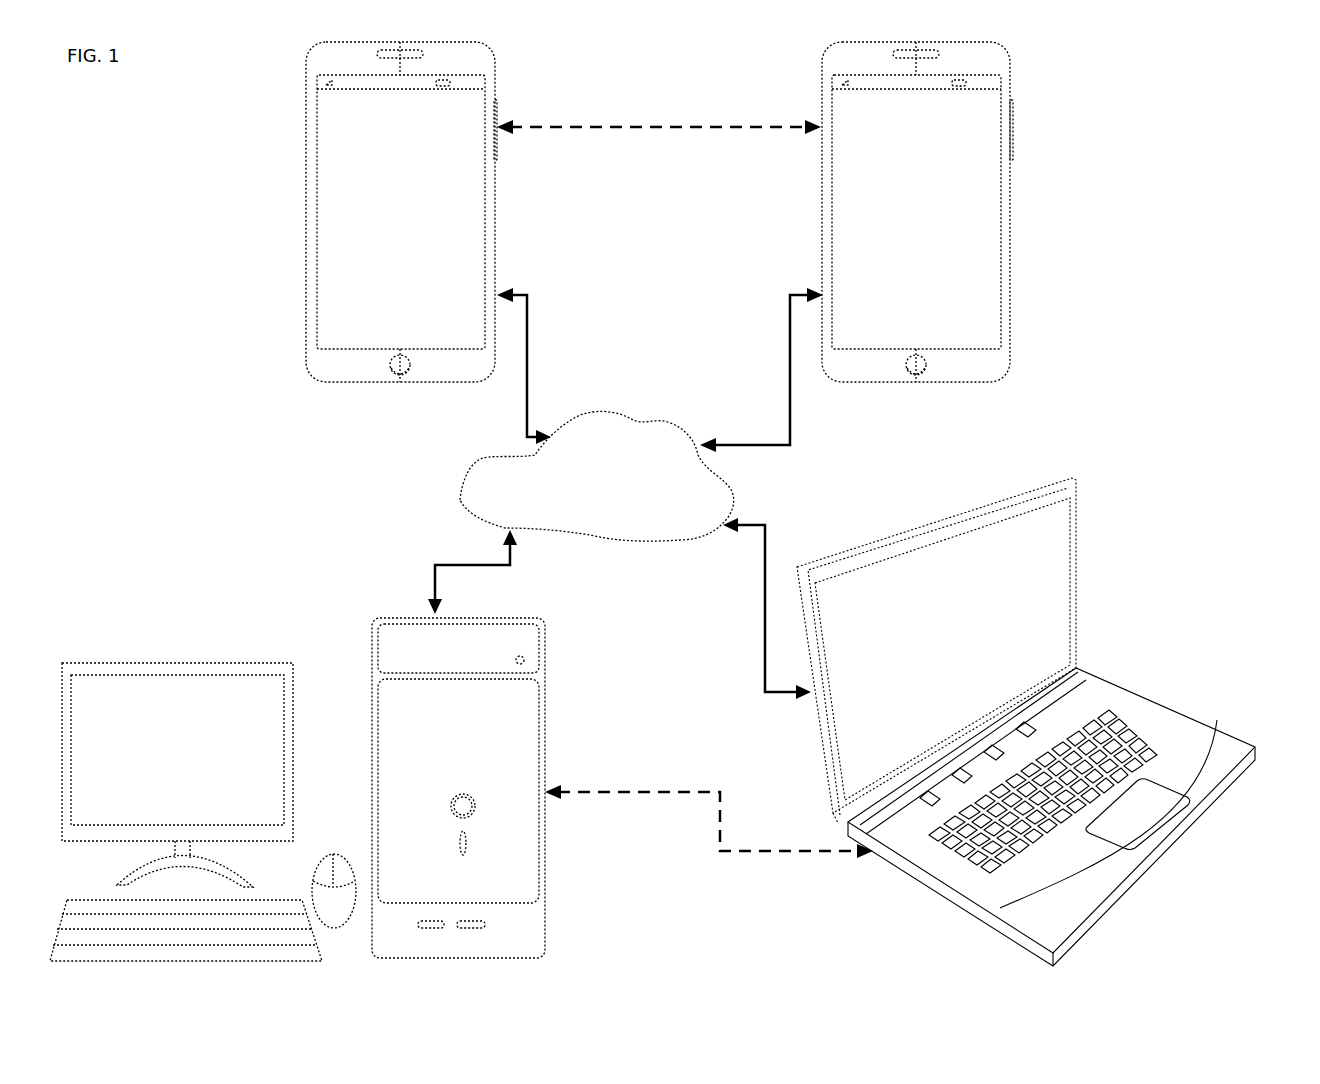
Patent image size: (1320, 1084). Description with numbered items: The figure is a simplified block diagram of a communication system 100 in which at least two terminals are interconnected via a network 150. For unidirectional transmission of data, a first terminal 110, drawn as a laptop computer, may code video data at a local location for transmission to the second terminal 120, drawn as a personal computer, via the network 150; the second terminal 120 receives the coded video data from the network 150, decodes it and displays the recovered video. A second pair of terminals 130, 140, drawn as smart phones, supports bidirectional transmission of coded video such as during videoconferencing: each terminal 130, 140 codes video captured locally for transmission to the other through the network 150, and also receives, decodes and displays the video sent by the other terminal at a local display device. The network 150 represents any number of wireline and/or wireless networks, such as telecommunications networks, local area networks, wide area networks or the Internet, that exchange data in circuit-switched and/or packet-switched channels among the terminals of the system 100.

The communication system 100 is at (652, 504).
The first terminal 110 is at (1076, 562).
The second terminal 120 is at (547, 913).
The terminal 130 is at (306, 151).
The terminal 140 is at (822, 155).
The network 150 is at (597, 476).